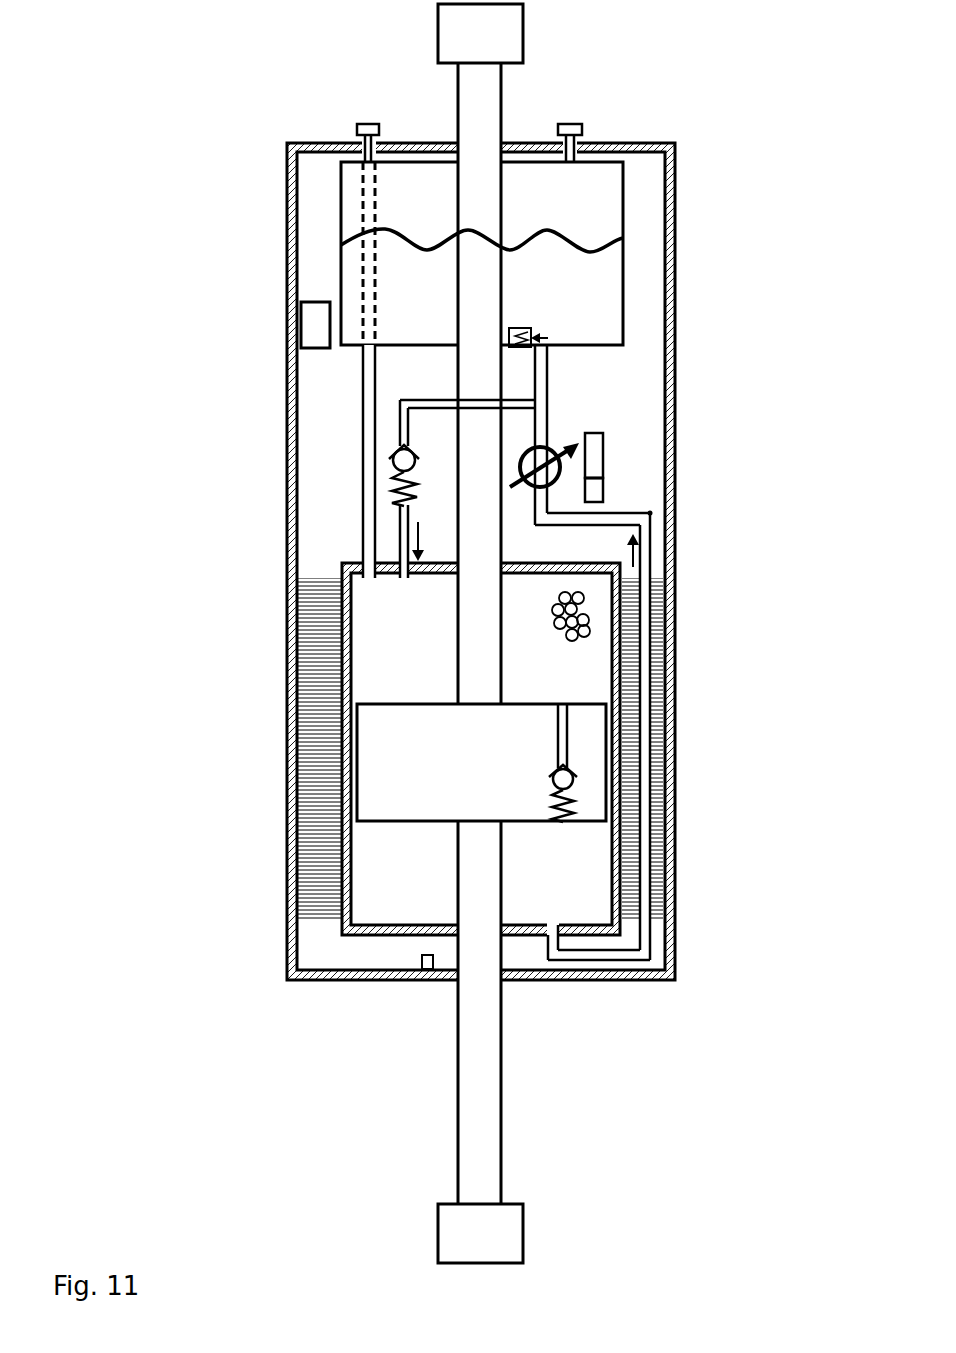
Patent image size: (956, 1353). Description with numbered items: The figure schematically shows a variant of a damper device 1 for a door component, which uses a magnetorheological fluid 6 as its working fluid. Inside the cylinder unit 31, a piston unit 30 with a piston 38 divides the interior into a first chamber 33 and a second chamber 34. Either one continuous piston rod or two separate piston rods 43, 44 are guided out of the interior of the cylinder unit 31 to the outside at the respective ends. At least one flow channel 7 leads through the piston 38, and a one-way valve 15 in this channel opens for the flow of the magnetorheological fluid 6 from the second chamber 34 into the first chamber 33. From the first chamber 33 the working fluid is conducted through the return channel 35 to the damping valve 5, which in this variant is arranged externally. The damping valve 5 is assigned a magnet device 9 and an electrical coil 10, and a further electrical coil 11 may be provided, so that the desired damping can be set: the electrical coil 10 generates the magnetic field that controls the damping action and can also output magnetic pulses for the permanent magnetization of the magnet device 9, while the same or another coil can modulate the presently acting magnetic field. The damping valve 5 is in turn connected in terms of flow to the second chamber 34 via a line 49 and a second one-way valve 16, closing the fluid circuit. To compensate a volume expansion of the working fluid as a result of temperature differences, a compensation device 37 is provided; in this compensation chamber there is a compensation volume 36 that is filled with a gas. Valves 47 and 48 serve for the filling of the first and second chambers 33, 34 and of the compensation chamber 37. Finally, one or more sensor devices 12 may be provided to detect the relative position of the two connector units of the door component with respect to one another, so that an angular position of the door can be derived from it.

The damper device 1 is at (185, 115).
The damping valve 5 is at (670, 268).
The magnetorheological fluid 6 is at (552, 615).
The flow channel 7 is at (558, 740).
The magnet device 9 is at (600, 460).
The electrical coil 10 is at (600, 463).
The electrical coil 11 is at (600, 477).
The sensor device 12 is at (312, 325).
The one-way valve 15 is at (553, 782).
The second one-way valve 16 is at (390, 465).
The piston unit 30 is at (348, 749).
The cylinder unit 31 is at (341, 569).
The first chamber 33 is at (372, 881).
The second chamber 34 is at (361, 673).
The return channel 35 is at (643, 883).
The compensation volume 36 is at (610, 210).
The compensation device 37 is at (352, 178).
The piston 38 is at (328, 794).
The piston rod 43 is at (478, 1093).
The piston rod 44 is at (478, 216).
The valve 47 is at (358, 125).
The valve 48 is at (567, 125).
The line 49 is at (405, 400).